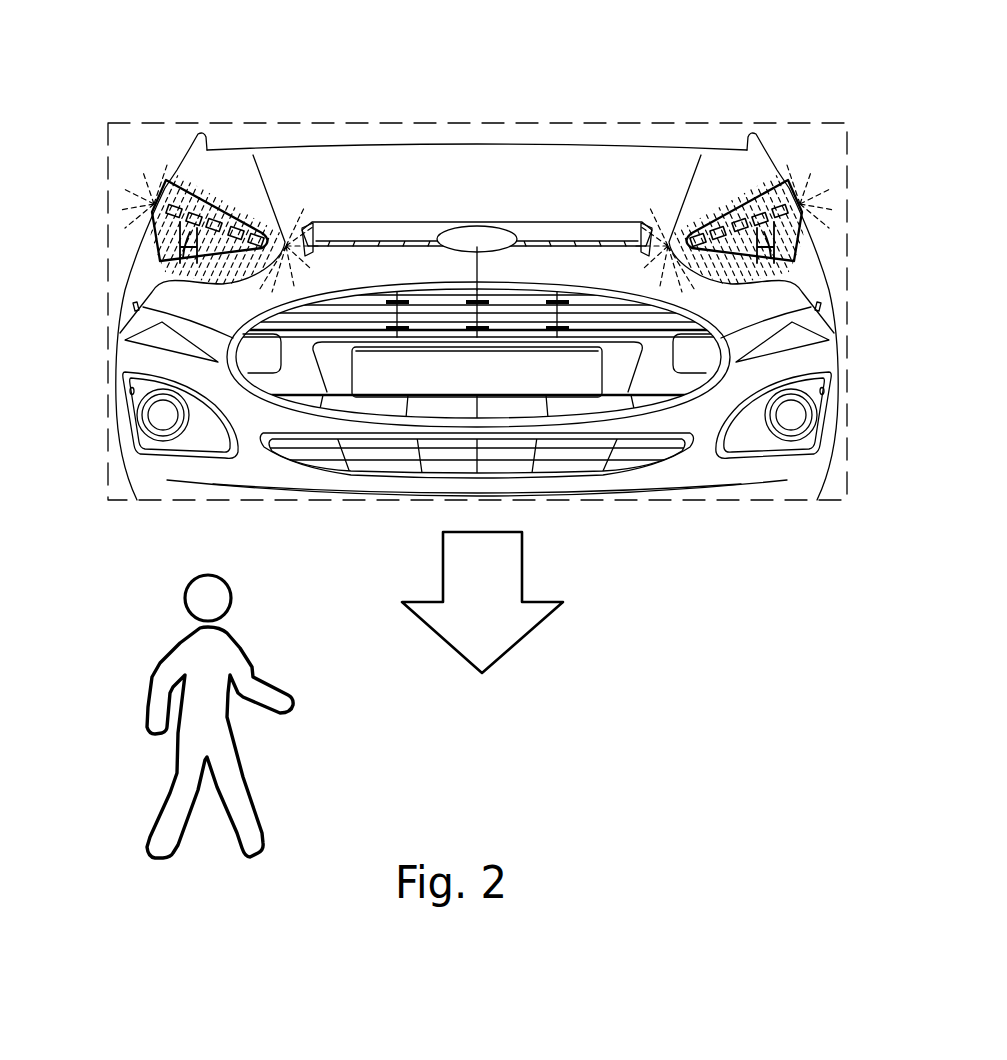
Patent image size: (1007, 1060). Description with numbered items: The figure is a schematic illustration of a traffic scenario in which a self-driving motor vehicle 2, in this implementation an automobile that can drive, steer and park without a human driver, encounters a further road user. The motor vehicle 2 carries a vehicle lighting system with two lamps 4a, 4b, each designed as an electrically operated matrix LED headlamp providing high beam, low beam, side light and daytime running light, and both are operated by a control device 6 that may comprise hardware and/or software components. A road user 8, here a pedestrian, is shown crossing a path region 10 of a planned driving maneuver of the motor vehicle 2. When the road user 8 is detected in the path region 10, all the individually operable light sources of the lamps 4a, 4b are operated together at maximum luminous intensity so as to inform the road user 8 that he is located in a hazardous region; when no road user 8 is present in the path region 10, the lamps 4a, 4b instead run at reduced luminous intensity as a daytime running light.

The motor vehicle 2 is at (477, 260).
The control device 6 is at (708, 92).
The lamp 4a is at (800, 208).
The lamp 4b is at (158, 212).
The road user 8 is at (232, 600).
The path region 10 is at (562, 603).